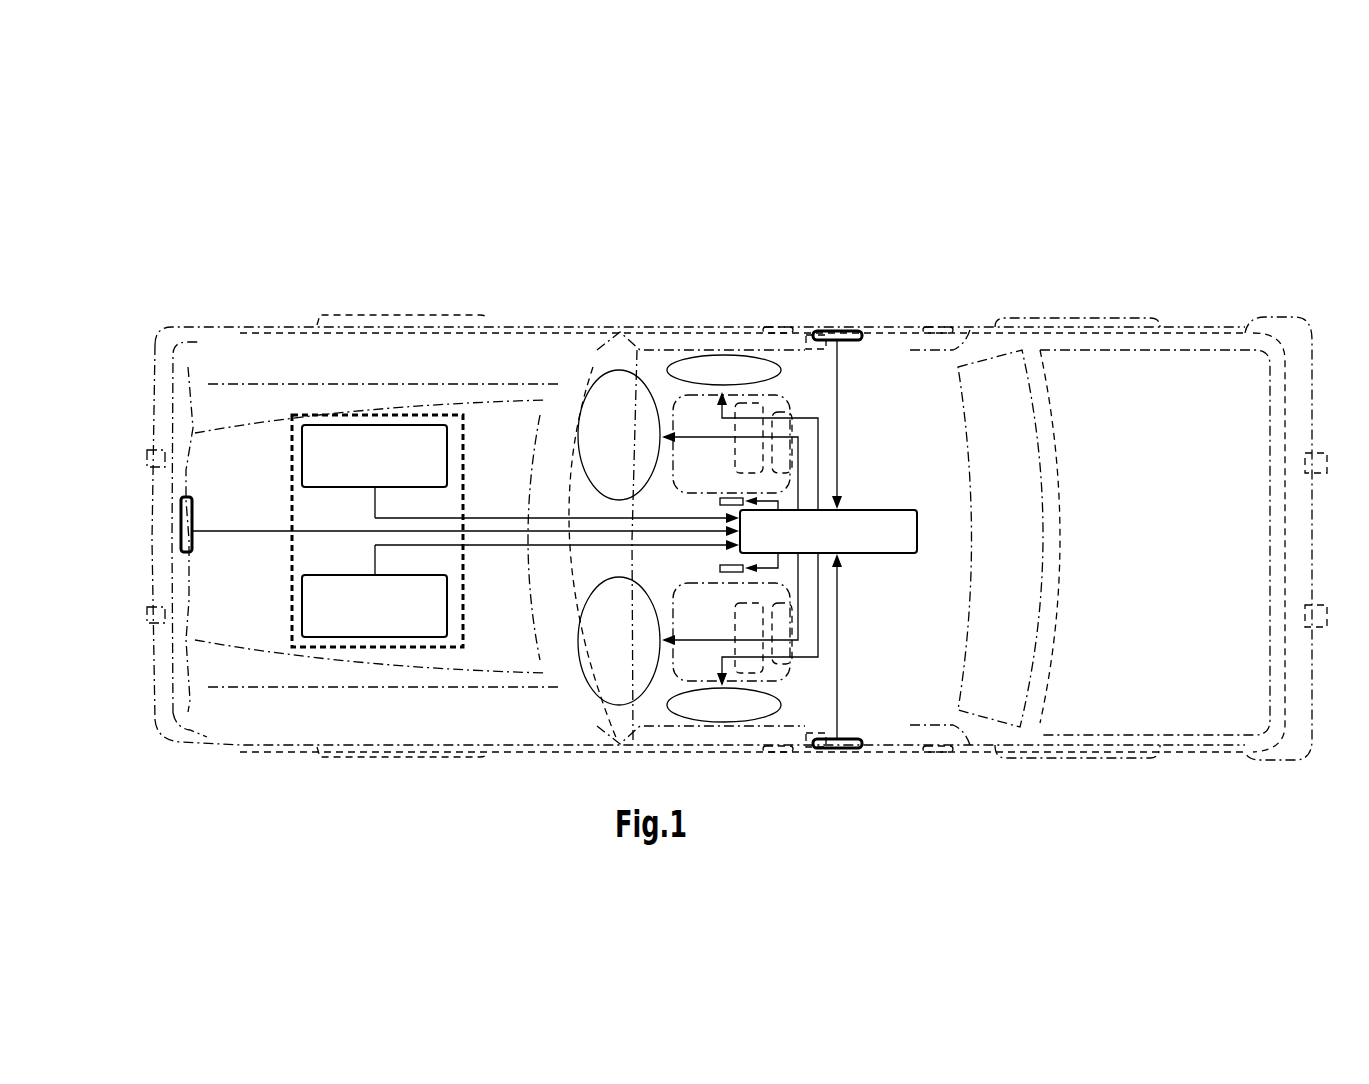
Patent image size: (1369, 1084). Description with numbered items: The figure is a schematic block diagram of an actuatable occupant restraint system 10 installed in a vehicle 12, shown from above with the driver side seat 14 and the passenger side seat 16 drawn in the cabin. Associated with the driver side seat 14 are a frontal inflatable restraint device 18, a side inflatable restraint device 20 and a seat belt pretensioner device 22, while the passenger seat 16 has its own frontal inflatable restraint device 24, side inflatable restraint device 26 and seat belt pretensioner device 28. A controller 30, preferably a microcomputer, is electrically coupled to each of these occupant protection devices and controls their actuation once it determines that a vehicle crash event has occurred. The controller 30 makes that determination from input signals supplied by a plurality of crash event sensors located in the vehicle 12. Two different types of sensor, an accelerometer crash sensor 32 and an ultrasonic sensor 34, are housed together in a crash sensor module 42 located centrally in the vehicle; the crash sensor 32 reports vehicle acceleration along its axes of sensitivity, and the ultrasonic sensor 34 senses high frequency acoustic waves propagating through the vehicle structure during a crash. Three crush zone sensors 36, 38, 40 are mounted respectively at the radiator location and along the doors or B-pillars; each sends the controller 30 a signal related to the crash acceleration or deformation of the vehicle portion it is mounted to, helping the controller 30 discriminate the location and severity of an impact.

The actuatable occupant restraint system 10 is at (873, 382).
The vehicle 12 is at (1270, 317).
The driver side seat 14 is at (777, 675).
The passenger side seat 16 is at (790, 400).
The frontal inflatable restraint device 18 is at (618, 668).
The side inflatable restraint device 20 is at (733, 708).
The seat belt pretensioner device 22 is at (733, 573).
The frontal inflatable restraint device 24 is at (618, 404).
The side inflatable restraint device 26 is at (722, 372).
The seat belt pretensioner device 28 is at (733, 500).
The controller 30 is at (920, 534).
The crash sensor 32 is at (315, 443).
The ultrasonic sensor 34 is at (317, 617).
The crush zone sensor 36 is at (183, 521).
The crush zone sensor 38 is at (845, 330).
The crush zone sensor 40 is at (845, 747).
The crash sensor module 42 is at (467, 487).